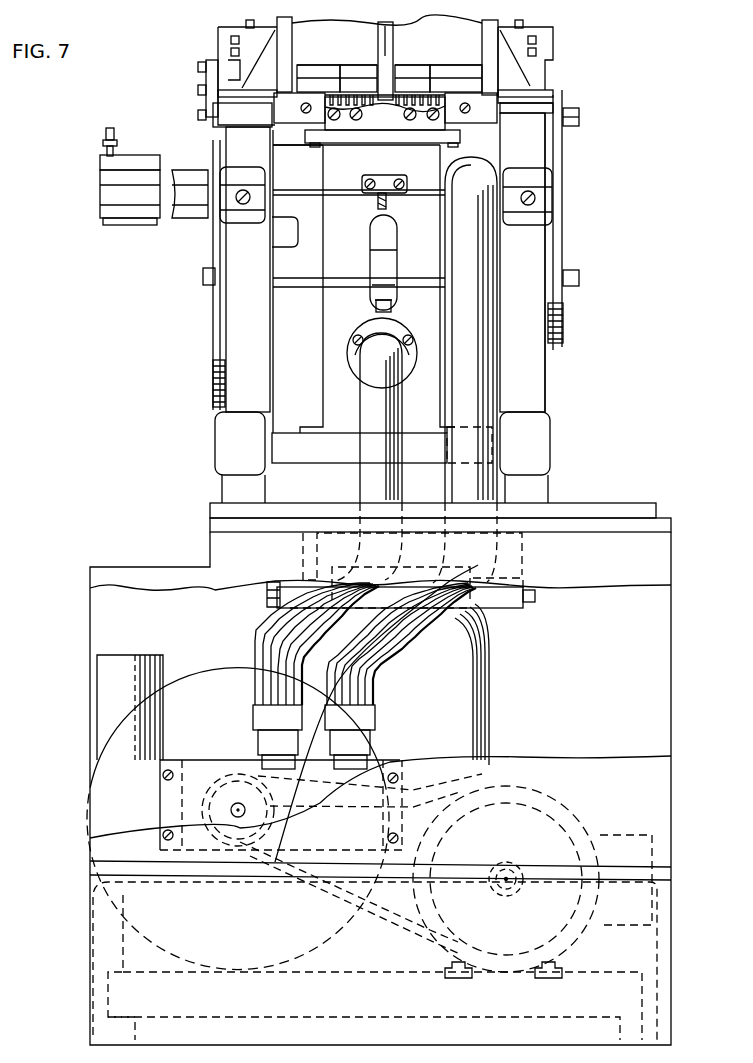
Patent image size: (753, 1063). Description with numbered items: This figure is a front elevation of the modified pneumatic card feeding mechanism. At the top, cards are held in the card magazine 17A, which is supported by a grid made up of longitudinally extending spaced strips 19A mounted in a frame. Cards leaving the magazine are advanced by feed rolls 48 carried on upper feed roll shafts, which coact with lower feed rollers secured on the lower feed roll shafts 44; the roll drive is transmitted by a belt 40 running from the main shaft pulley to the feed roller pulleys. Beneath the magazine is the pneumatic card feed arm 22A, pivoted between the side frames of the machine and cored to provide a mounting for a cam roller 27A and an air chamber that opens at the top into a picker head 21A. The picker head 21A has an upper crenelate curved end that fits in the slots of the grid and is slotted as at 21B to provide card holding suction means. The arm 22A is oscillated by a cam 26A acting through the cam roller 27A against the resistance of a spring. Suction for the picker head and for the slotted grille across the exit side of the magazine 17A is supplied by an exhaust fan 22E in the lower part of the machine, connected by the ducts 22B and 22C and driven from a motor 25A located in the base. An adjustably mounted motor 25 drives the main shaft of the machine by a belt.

The card magazine 17A is at (283, 35).
The lower feed roll shaft 44 is at (352, 75).
The feed roll 48 is at (318, 77).
The slot 21B is at (420, 75).
The picker head 21A is at (372, 108).
The strip 19A is at (420, 108).
The belt 40 is at (558, 208).
The cam roller 27A is at (385, 265).
The cam 26A is at (392, 307).
The pneumatic card feed arm 22A is at (330, 302).
The duct 22B is at (280, 637).
The duct 22C is at (410, 645).
The exhaust fan 22E is at (228, 672).
The motor 25 is at (468, 658).
The motor 25A is at (573, 807).